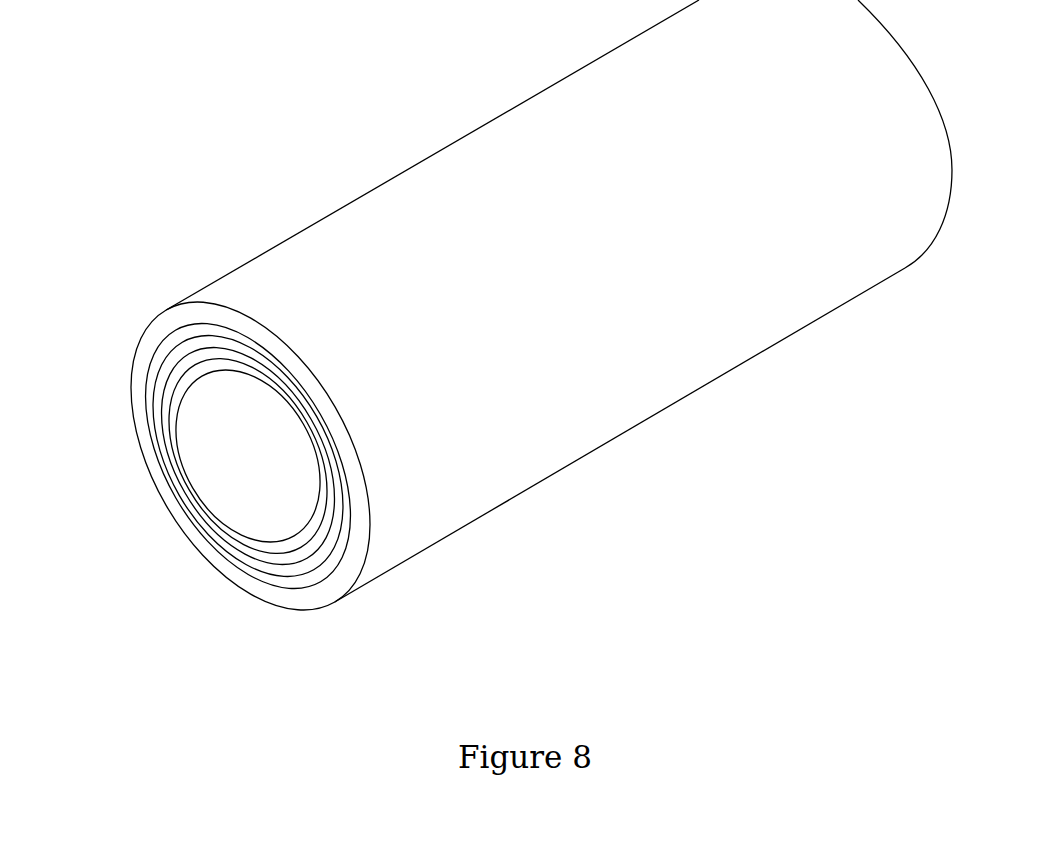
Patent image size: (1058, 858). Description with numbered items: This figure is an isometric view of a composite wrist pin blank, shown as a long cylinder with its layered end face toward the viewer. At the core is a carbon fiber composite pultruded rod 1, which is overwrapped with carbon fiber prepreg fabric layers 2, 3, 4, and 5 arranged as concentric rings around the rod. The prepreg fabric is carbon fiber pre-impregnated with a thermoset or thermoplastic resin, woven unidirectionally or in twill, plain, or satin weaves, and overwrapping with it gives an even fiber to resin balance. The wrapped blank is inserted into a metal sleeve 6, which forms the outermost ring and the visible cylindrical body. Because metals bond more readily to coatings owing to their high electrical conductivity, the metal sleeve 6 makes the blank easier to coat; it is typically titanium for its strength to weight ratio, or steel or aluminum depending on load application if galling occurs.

The carbon fiber composite pultruded rod 1 is at (168, 445).
The carbon fiber prepreg fabric layer 2 is at (169, 472).
The carbon fiber prepreg fabric layer 3 is at (171, 496).
The carbon fiber prepreg fabric layer 4 is at (194, 533).
The carbon fiber prepreg fabric layer 5 is at (217, 571).
The metal sleeve 6 is at (274, 625).